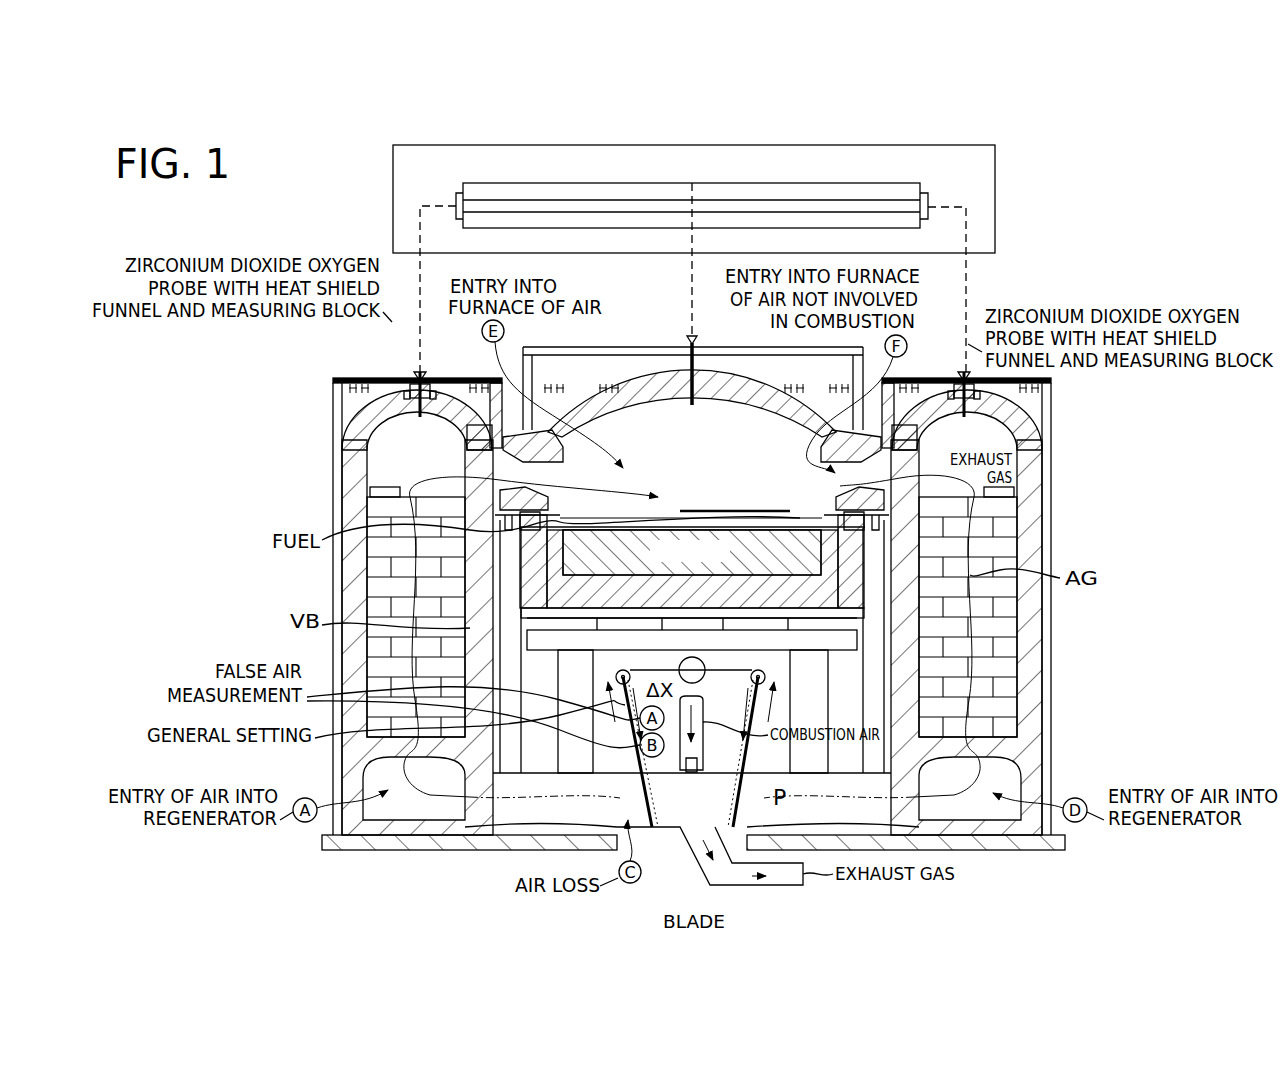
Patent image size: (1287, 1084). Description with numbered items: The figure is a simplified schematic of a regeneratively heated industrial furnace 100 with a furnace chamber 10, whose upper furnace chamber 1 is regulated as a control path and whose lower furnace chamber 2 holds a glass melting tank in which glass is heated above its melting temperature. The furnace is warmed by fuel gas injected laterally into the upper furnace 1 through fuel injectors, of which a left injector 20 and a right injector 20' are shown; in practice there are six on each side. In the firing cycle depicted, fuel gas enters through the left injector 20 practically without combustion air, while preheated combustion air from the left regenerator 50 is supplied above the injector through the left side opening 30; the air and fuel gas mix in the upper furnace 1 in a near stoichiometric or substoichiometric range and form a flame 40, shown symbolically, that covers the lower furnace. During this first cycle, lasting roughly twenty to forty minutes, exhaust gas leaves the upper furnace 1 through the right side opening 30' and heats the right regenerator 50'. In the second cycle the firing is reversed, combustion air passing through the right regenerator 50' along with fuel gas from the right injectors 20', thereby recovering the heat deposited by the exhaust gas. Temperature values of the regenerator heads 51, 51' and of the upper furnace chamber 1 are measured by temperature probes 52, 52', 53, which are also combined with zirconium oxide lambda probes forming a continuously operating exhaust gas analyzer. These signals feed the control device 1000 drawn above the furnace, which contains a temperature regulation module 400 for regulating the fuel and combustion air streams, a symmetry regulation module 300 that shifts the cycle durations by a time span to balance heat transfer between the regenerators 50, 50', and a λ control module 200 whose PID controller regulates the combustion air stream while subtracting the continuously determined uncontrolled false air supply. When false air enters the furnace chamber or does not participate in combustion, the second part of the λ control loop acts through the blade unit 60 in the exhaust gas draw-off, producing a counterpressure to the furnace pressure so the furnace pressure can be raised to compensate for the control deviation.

The upper furnace chamber 1 is at (662, 403).
The lower furnace chamber 2 is at (802, 552).
The furnace chamber 10 is at (710, 443).
The left fuel injector 20 is at (543, 489).
The right fuel injector 20' is at (834, 489).
The left side opening 30 is at (525, 453).
The right side opening 30' is at (882, 446).
The flame 40 is at (685, 518).
The left regenerator 50 is at (391, 609).
The right regenerator 50' is at (996, 609).
The regenerator head 51 is at (417, 443).
The regenerator head 51' is at (967, 443).
The temperature probe 52 is at (410, 372).
The temperature probe 52' is at (954, 372).
The temperature probe 53 is at (696, 350).
The blade unit 60 is at (651, 832).
The regeneratively heated industrial furnace 100 is at (1113, 262).
The λ control module 200 is at (766, 205).
The symmetry regulation module 300 is at (840, 195).
The temperature regulation module 400 is at (928, 217).
The control device 1000 is at (995, 153).